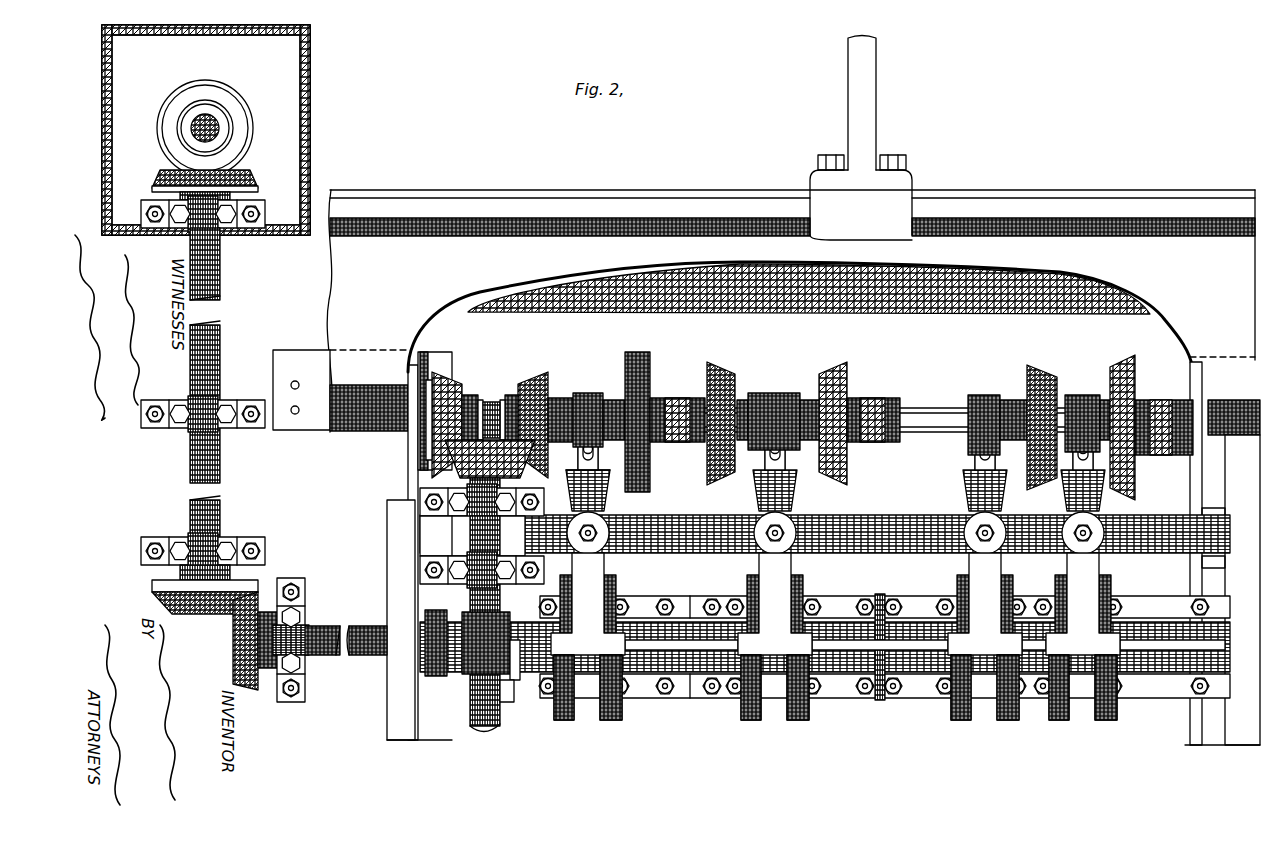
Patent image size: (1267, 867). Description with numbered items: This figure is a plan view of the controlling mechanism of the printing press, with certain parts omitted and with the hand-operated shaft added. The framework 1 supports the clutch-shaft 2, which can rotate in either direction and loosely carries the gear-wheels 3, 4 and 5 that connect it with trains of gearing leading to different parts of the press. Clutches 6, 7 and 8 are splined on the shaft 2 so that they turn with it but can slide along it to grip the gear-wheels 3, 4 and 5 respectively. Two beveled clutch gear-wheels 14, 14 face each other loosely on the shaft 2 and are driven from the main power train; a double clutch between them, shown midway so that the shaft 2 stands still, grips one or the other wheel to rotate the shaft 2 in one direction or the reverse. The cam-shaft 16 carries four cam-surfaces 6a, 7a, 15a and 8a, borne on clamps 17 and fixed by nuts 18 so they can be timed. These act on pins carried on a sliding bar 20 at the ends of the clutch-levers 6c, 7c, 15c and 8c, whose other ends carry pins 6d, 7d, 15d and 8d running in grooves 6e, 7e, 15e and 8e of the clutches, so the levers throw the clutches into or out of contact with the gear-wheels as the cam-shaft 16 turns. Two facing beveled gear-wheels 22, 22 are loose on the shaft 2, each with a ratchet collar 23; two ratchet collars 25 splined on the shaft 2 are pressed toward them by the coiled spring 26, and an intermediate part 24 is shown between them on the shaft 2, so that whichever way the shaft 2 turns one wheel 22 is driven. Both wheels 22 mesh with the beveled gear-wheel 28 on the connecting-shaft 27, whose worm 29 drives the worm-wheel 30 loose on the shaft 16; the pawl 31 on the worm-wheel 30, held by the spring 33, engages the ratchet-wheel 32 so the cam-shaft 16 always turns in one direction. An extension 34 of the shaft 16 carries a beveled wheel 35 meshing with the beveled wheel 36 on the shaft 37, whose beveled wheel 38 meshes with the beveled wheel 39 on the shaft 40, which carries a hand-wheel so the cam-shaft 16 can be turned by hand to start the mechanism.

The framework 1 is at (766, 391).
The clutch-shaft 2 is at (922, 412).
The gear-wheel 3 is at (1120, 366).
The gear-wheel 4 is at (1045, 368).
The gear-wheel 5 is at (650, 360).
The clutch 6 is at (1080, 398).
The cam-surface 6a is at (1112, 712).
The clutch-lever 6c is at (1103, 576).
The pin 6d is at (1080, 455).
The groove 6e is at (1085, 395).
The clutch 7 is at (978, 398).
The cam-surface 7a is at (1005, 715).
The clutch-lever 7c is at (1005, 576).
The pin 7d is at (978, 440).
The groove 7e is at (990, 395).
The clutch 8 is at (598, 432).
The cam-surface 8a is at (620, 712).
The clutch-lever 8c is at (606, 575).
The pin 8d is at (578, 452).
The groove 8e is at (588, 393).
The beveled clutch gear-wheels 14 is at (718, 370).
The cam-surface 15a is at (805, 712).
The clutch-lever 15c is at (795, 575).
The pin 15d is at (768, 455).
The groove 15e is at (772, 393).
The cam-shaft 16 is at (533, 662).
The clamps 17 is at (722, 698).
The nuts 18 is at (878, 700).
The sliding bar 20 is at (660, 641).
The beveled gear-wheels 22 is at (448, 380).
The collar 23 is at (468, 395).
The spring 24 is at (494, 414).
The collars 25 is at (495, 409).
The coiled spring 26 is at (490, 457).
The connecting-shaft 27 is at (472, 536).
The beveled gear-wheel 28 is at (482, 497).
The worm 29 is at (450, 675).
The worm-wheel 30 is at (485, 728).
The pawl 31 is at (516, 682).
The ratchet-wheel 32 is at (508, 702).
The spring 33 is at (510, 630).
The extension 34 is at (360, 656).
The beveled wheel 35 is at (246, 688).
The beveled wheel 36 is at (252, 580).
The shaft 37 is at (214, 458).
The beveled wheel 38 is at (250, 175).
The beveled wheel 39 is at (250, 108).
The shaft 40 is at (218, 118).